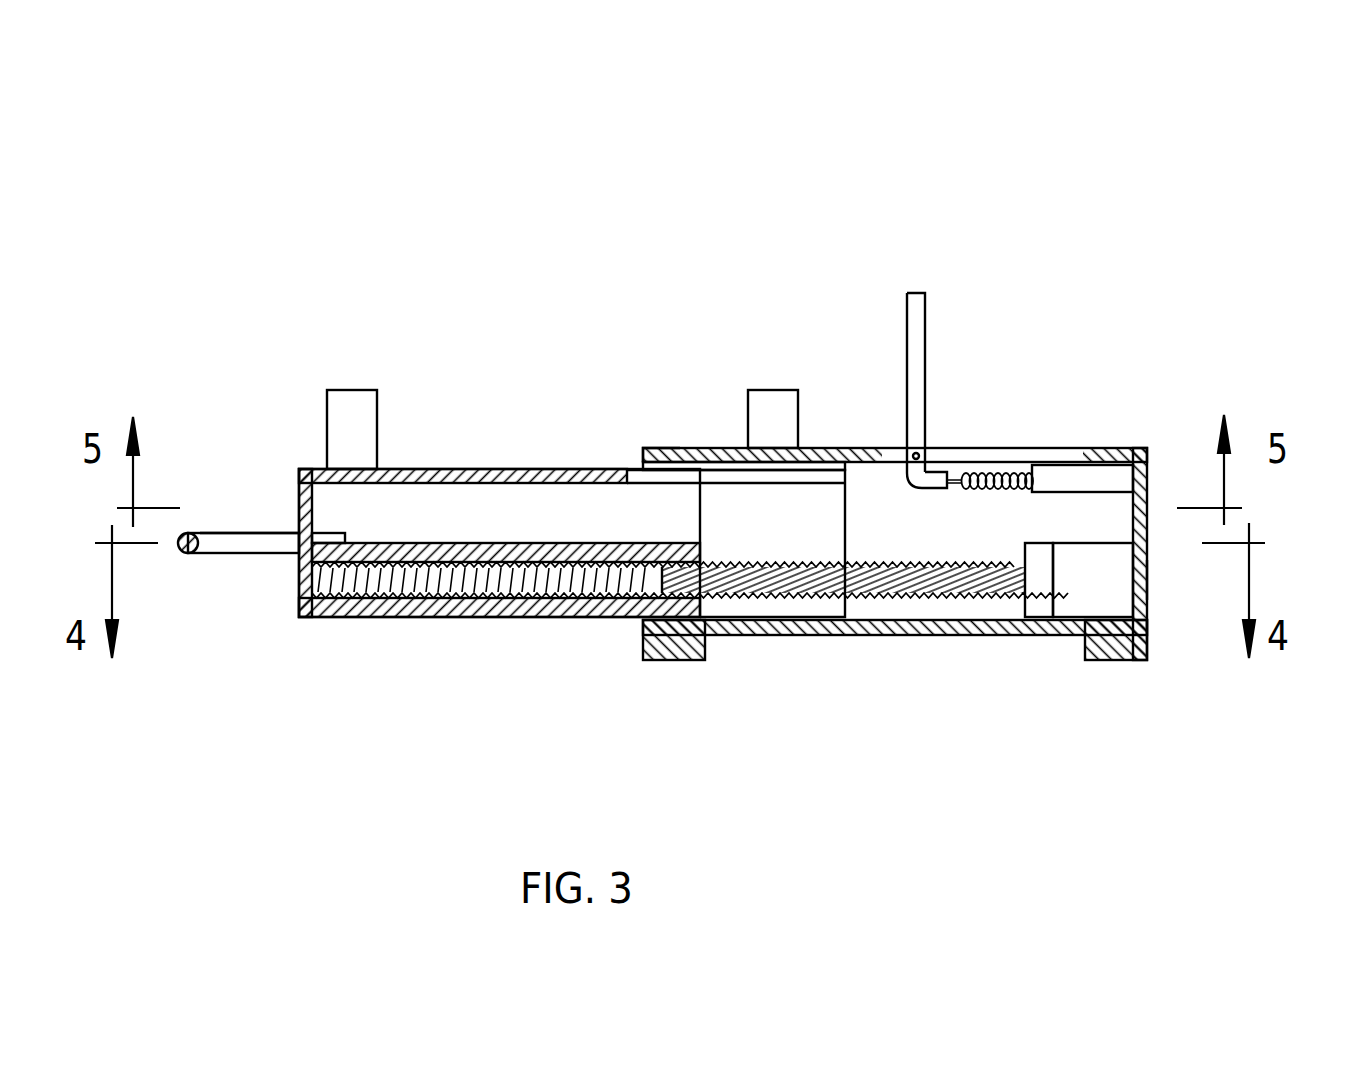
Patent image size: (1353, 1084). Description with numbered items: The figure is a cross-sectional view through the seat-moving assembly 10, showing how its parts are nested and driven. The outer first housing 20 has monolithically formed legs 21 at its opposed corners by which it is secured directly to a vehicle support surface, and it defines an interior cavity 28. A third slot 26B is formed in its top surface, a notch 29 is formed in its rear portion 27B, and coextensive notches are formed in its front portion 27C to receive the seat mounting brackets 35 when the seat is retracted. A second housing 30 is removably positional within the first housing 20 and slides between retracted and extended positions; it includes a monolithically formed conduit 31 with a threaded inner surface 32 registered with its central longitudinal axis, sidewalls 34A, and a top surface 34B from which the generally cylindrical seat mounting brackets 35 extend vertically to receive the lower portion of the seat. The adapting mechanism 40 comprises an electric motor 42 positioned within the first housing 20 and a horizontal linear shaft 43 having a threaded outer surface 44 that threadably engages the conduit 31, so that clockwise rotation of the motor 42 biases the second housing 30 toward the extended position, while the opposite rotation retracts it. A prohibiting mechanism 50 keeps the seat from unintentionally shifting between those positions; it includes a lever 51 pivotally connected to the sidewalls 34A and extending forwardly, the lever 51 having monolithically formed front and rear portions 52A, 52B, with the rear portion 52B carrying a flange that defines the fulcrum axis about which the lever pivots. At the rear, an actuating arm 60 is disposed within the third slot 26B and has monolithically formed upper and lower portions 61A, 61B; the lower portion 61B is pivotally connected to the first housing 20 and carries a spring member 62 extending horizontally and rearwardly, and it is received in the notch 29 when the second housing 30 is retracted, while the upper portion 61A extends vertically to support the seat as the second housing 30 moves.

The assembly 10 is at (105, 224).
The first housing 20 is at (952, 506).
The legs 21 is at (673, 647).
The third slot 26B is at (1070, 452).
The rear portion 27B is at (1147, 580).
The front portion 27C is at (600, 440).
The cavity 28 is at (1118, 517).
The notch 29 is at (1120, 475).
The second housing 30 is at (588, 473).
The conduit 31 is at (312, 578).
The threaded inner surface 32 is at (522, 580).
The sidewalls 34A is at (847, 525).
The top surface 34B is at (453, 468).
The seat mounting brackets 35 is at (367, 410).
The adapting mechanism 40 is at (1003, 610).
The electric motor 42 is at (1080, 603).
The linear shaft 43 is at (917, 583).
The threaded outer surface 44 is at (887, 557).
The prohibiting mechanism 50 is at (255, 508).
The lever 51 is at (232, 533).
The front portion 52A is at (178, 553).
The rear portion 52B is at (340, 533).
The actuating arm 60 is at (1015, 290).
The upper portion 61A is at (915, 292).
The lower portion 61B is at (926, 472).
The spring member 62 is at (1007, 470).